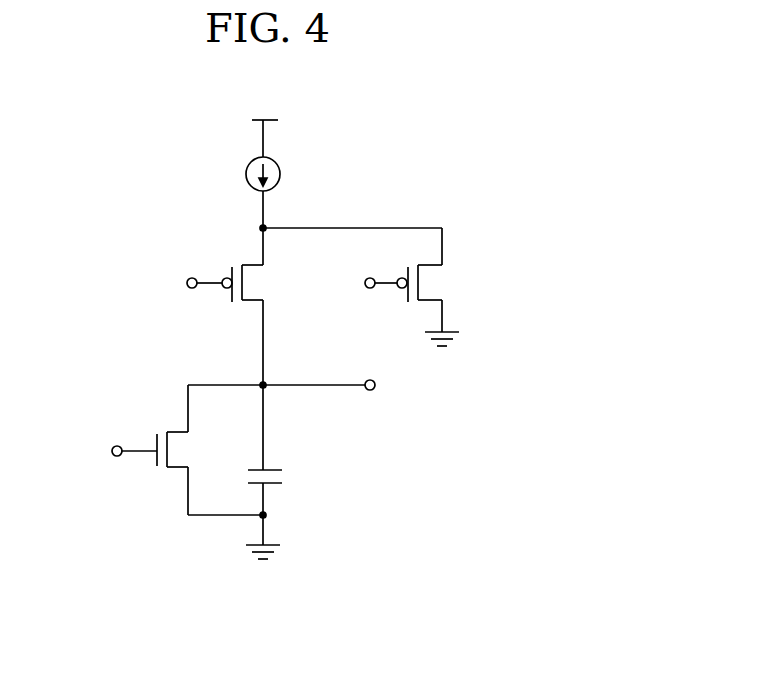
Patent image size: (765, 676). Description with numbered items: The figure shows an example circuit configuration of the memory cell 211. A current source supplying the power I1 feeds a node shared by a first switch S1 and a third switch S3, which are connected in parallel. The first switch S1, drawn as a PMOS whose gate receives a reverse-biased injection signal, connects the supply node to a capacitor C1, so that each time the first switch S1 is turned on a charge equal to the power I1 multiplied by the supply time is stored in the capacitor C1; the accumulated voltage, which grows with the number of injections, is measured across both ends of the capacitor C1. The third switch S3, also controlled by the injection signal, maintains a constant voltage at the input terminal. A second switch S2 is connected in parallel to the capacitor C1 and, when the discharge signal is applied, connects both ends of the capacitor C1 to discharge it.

The memory cell 211 is at (421, 111).
The power supplied by the power supply I1 is at (251, 174).
The first switch S1 is at (211, 283).
The second switch S2 is at (162, 450).
The third switch S3 is at (395, 283).
The capacitor C1 is at (280, 473).